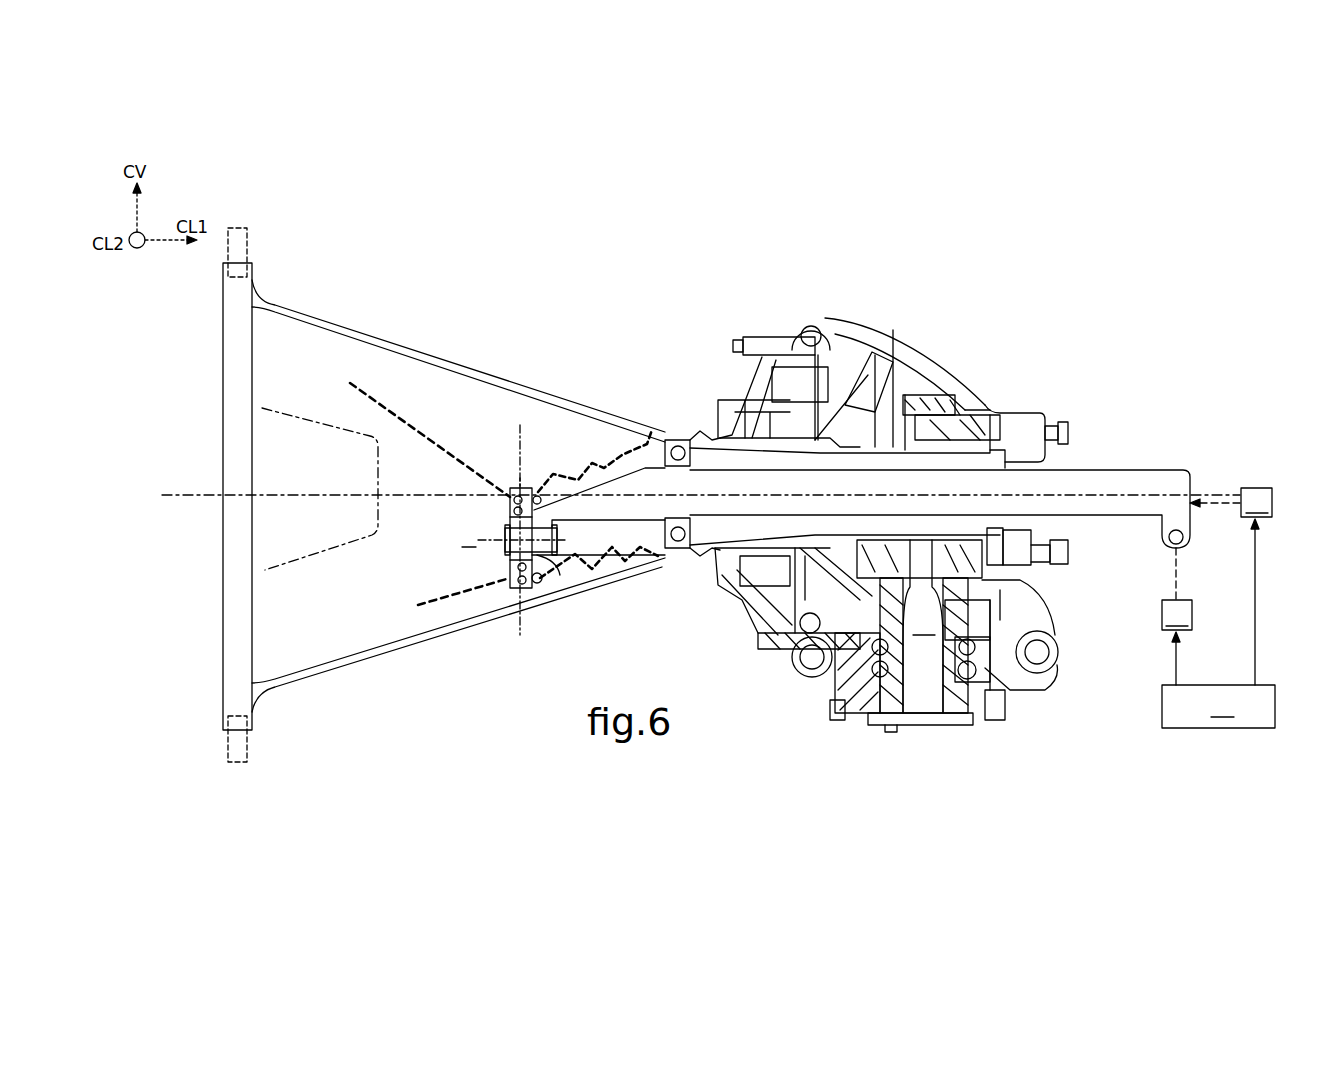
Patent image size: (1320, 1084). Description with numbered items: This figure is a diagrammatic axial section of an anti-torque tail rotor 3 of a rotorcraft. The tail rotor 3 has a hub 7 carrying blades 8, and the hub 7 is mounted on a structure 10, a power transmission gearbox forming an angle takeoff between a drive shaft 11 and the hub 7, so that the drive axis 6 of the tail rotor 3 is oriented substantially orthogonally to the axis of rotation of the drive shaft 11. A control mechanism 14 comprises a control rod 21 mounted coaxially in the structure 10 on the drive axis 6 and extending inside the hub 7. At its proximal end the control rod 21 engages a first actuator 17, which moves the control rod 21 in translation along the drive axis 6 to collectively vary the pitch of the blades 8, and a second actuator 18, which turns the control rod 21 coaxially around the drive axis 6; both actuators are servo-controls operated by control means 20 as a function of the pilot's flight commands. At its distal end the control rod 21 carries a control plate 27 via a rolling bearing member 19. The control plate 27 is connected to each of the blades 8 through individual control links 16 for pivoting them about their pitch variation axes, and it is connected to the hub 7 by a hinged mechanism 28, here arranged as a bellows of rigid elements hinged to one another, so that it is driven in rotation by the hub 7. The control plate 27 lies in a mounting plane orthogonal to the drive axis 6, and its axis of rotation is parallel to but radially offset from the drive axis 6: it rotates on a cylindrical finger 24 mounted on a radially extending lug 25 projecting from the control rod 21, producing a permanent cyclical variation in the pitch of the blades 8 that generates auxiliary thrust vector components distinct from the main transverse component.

The tail rotor 3 is at (1152, 370).
The drive axis 6 is at (701, 485).
The hub 7 is at (405, 340).
The blades 8 is at (252, 246).
The structure 10 is at (930, 348).
The drive shaft 11 is at (891, 630).
The control mechanism 14 is at (525, 348).
The control links 16 is at (436, 441).
The first actuator 17 is at (1231, 502).
The second actuator 18 is at (1177, 589).
The rolling bearing member 19 is at (514, 511).
The control means 20 is at (1218, 623).
The control rod 21 is at (1090, 468).
The cylindrical finger 24 is at (505, 542).
The lug 25 is at (560, 575).
The control plate 27 is at (527, 490).
The hinged mechanism 28 is at (603, 462).